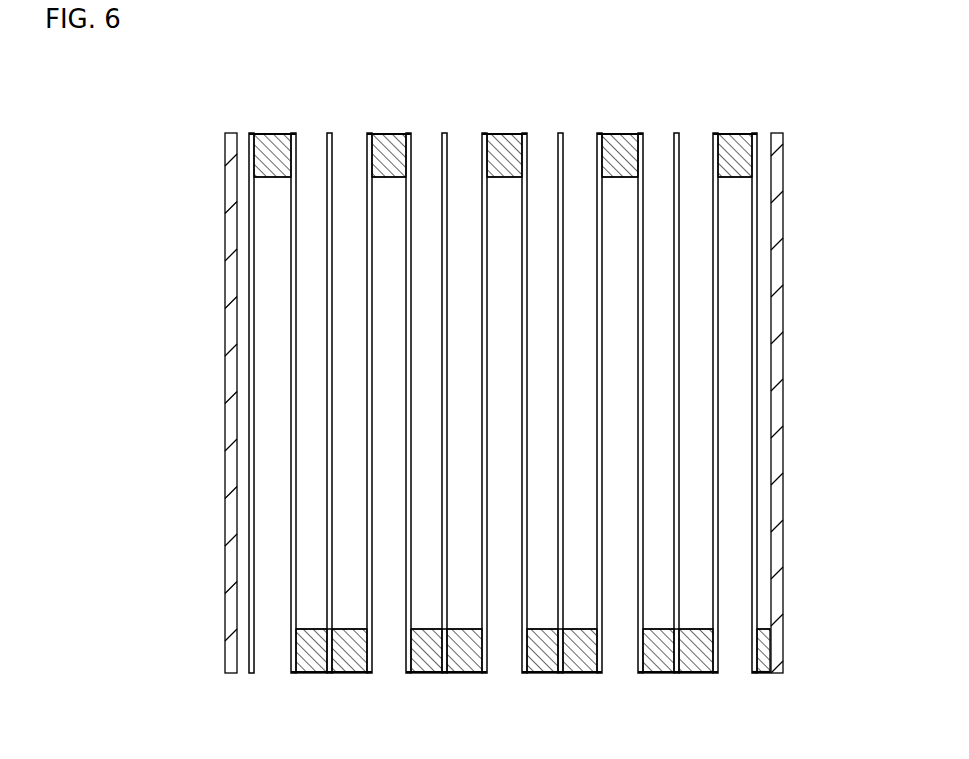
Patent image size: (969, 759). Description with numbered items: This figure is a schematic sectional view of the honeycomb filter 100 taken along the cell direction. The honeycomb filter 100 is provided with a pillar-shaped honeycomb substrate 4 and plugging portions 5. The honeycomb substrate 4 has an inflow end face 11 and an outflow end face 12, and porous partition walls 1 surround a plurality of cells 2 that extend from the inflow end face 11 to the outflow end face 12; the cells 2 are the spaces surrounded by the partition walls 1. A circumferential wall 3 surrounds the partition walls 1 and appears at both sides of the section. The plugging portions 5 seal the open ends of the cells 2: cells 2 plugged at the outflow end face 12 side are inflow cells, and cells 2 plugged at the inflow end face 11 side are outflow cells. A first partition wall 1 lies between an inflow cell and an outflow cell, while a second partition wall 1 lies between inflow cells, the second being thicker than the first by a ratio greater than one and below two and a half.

The honeycomb filter 100 is at (847, 46).
The partition wall 1 is at (640, 187).
The cell 2 is at (573, 183).
The circumferential wall 3 is at (233, 300).
The honeycomb substrate 4 is at (413, 143).
The plugging portion 5 is at (503, 128).
The inflow end face 11 is at (250, 117).
The outflow end face 12 is at (282, 689).